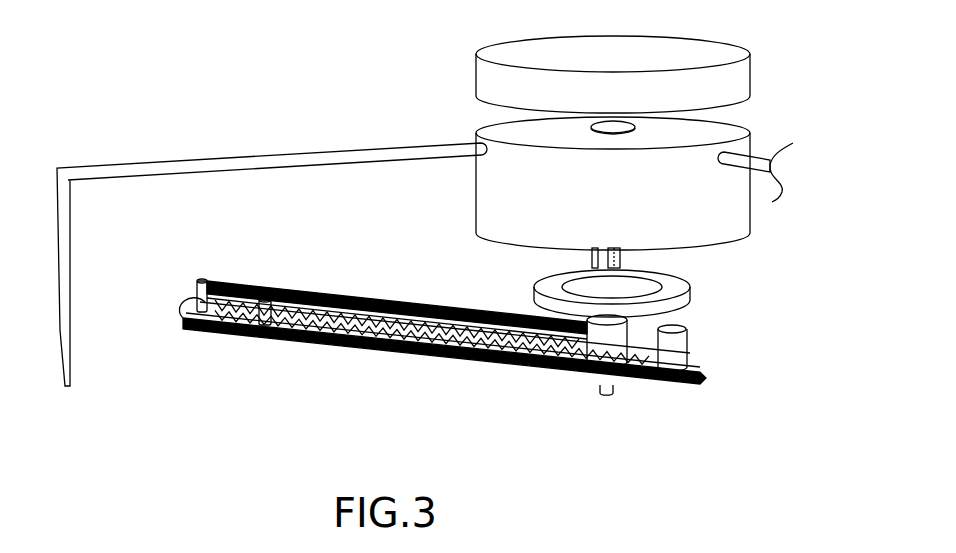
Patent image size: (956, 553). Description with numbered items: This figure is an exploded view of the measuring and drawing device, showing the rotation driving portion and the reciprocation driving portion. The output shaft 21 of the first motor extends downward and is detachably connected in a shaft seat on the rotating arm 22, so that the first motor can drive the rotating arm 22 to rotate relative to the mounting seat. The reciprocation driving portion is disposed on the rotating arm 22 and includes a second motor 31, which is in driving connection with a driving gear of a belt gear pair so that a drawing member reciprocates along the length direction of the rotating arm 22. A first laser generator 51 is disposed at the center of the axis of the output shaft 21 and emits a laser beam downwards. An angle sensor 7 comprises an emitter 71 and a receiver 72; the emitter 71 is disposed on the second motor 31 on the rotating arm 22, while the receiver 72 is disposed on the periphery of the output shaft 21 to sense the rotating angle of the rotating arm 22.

The output shaft 21 is at (598, 257).
The rotating arm 22 is at (452, 360).
The second motor 31 is at (697, 368).
The first laser generator 51 is at (613, 390).
The angle sensor 7 is at (679, 318).
The emitter 71 is at (628, 323).
The receiver 72 is at (692, 291).